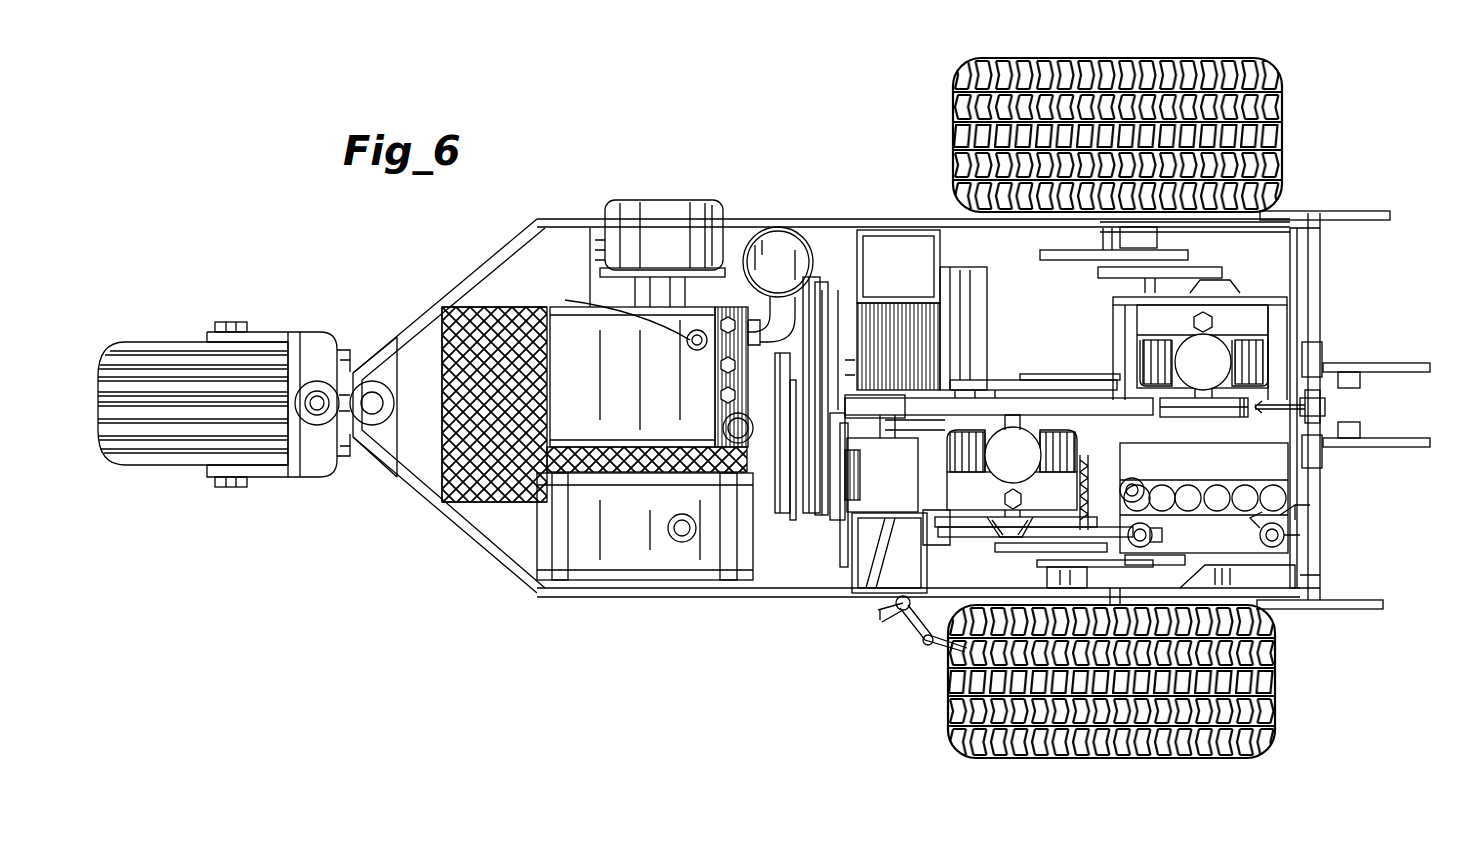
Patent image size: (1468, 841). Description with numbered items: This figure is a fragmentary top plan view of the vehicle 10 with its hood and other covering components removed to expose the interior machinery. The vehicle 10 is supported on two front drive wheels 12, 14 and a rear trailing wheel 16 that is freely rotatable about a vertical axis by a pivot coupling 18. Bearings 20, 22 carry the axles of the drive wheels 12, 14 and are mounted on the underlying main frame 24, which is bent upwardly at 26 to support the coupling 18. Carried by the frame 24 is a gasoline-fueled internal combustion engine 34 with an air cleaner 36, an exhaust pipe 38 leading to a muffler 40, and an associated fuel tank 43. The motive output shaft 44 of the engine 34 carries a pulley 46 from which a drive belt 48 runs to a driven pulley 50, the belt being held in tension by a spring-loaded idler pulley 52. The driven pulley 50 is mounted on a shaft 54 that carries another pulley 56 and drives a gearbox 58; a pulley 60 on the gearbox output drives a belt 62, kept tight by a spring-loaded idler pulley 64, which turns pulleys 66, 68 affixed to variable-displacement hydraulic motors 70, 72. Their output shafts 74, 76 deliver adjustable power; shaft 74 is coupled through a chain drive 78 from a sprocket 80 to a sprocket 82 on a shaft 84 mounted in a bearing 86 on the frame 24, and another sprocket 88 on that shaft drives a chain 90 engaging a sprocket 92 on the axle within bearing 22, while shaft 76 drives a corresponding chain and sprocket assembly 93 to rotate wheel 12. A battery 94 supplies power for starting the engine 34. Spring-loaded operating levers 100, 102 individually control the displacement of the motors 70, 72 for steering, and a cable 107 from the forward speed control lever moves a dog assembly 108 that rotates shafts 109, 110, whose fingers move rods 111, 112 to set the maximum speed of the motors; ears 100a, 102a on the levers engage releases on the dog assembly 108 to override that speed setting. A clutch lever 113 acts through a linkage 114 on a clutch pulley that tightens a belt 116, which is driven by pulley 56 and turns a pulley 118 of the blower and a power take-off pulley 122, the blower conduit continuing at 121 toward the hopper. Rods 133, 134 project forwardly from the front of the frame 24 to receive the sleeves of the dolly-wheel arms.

The vehicle 10 is at (658, 630).
The drive wheel 12 is at (1043, 65).
The drive wheel 14 is at (1047, 758).
The trailing wheel 16 is at (150, 340).
The pivot coupling 18 is at (318, 384).
The bearing 20 is at (1110, 246).
The bearing 22 is at (1153, 535).
The main frame 24 is at (960, 222).
The upwardly bent frame portion 26 is at (468, 272).
The internal combustion engine 34 is at (562, 300).
The air cleaner 36 is at (668, 203).
The exhaust pipe 38 is at (755, 300).
The muffler 40 is at (775, 240).
The fuel tank 43 is at (608, 590).
The motive output shaft 44 is at (720, 395).
The pulley 46 is at (845, 350).
The drive belt 48 is at (792, 522).
The driven pulley 50 is at (775, 520).
The spring-loaded idler pulley 52 is at (748, 444).
The shaft 54 is at (812, 520).
The pulley 56 is at (830, 522).
The gearbox 58 is at (905, 486).
The pulley 60 is at (912, 400).
The belt 62 is at (943, 390).
The spring-loaded idler pulley 64 is at (998, 390).
The pulley 66 is at (1045, 390).
The pulley 68 is at (1203, 420).
The hydraulic motor 70 is at (940, 465).
The hydraulic motor 72 is at (1250, 332).
The shaft 74 is at (985, 538).
The shaft 76 is at (1215, 290).
The chain drive 78 is at (985, 550).
The sprocket 80 is at (985, 510).
The sprocket 82 is at (1015, 485).
The shaft 84 is at (1120, 505).
The bearing 86 is at (1040, 568).
The sprocket 88 is at (1045, 560).
The chain 90 is at (1160, 560).
The sprocket 92 is at (1258, 535).
The chain and sprocket assembly 93 is at (1086, 288).
The battery 94 is at (1140, 455).
The operating lever 100 is at (1395, 465).
The ear 100a is at (1362, 432).
The operating lever 102 is at (1400, 368).
The ear 102a is at (1362, 388).
The cable 107 is at (1262, 420).
The dog assembly 108 is at (1325, 410).
The shaft 109 is at (1315, 328).
The shaft 110 is at (1318, 582).
The rod 111 is at (1300, 290).
The rod 112 is at (1318, 530).
The clutch lever 113 is at (920, 645).
The linkage 114 is at (875, 612).
The belt 116 is at (822, 290).
The pulley 118 is at (838, 290).
The conduit 121 is at (880, 235).
The power take-off pulley 122 is at (840, 378).
The rod 133 is at (1335, 212).
The rod 134 is at (1372, 612).